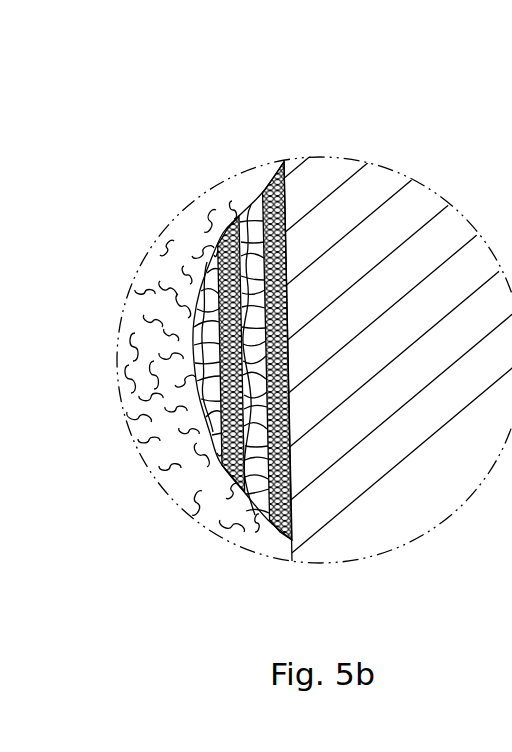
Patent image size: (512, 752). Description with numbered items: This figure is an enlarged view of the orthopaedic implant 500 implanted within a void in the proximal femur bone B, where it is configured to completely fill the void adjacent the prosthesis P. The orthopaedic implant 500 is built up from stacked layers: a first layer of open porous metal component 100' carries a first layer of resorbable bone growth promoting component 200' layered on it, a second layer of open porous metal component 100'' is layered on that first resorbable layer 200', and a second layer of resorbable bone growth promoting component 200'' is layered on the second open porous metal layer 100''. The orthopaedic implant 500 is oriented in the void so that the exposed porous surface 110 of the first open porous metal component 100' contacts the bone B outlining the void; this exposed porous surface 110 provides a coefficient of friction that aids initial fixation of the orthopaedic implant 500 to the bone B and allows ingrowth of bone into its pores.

The orthopaedic implant 500 is at (296, 156).
The prosthesis P is at (408, 210).
The second layer of resorbable bone growth promoting component 200'' is at (298, 305).
The second layer of open porous metal component 100'' is at (237, 284).
The first layer of resorbable bone growth promoting component 200' is at (205, 310).
The first layer of open porous metal component 100' is at (171, 351).
The exposed porous surface 110 is at (192, 406).
The bone B is at (190, 487).